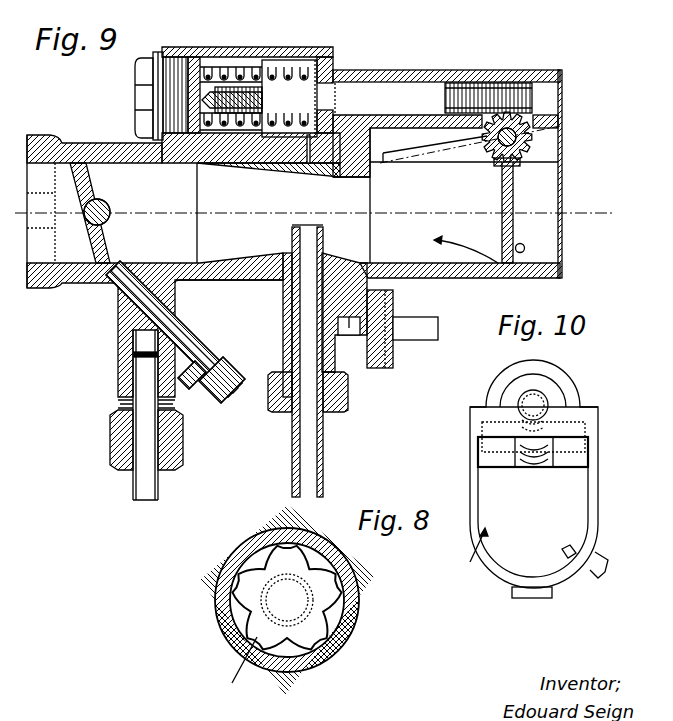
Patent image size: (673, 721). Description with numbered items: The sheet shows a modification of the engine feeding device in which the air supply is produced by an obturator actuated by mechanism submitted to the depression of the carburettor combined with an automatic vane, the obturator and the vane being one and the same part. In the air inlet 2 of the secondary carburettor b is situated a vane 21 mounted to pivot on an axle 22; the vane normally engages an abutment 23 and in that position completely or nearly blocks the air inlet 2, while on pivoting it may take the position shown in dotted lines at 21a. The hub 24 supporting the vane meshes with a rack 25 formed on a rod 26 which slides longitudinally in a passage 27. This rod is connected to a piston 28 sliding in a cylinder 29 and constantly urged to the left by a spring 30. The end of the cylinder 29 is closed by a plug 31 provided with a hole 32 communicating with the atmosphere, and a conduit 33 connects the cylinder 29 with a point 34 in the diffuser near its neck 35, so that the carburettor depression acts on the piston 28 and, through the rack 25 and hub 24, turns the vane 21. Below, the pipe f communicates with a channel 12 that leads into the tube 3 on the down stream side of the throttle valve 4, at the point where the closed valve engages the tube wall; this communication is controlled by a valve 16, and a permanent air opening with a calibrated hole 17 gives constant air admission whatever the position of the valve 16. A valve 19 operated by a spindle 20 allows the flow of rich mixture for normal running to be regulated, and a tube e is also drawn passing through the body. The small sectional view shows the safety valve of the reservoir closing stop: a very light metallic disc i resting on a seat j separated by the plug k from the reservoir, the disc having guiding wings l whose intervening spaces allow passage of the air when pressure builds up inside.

In FIG. 9, the air inlet 2 is at (545, 195).
In FIG. 9, the tube 3 is at (48, 213).
In FIG. 9, the throttle valve 4 is at (95, 163).
In FIG. 9, the channel 12 is at (115, 282).
In FIG. 9, the valve 16 is at (135, 340).
In FIG. 9, the calibrated hole 17 is at (224, 387).
In FIG. 9, the valve 19 is at (352, 335).
In FIG. 9, the spindle 20 is at (438, 325).
In FIG. 9, the vane 21 is at (514, 228).
In FIG. 10, the vane 21 is at (475, 555).
In FIG. 9, the vane position 21a is at (470, 159).
In FIG. 9, the axle 22 is at (520, 142).
In FIG. 10, the axle 22 is at (565, 452).
In FIG. 9, the abutment 23 is at (518, 262).
In FIG. 10, the abutment 23 is at (580, 553).
In FIG. 9, the hub 24 is at (520, 160).
In FIG. 10, the hub 24 is at (570, 463).
In FIG. 9, the rack 25 is at (508, 72).
In FIG. 10, the rack 25 is at (540, 402).
In FIG. 9, the rod 26 is at (380, 82).
In FIG. 9, the passage 27 is at (548, 97).
In FIG. 10, the passage 27 is at (545, 405).
In FIG. 9, the piston 28 is at (203, 57).
In FIG. 9, the cylinder 29 is at (292, 65).
In FIG. 9, the spring 30 is at (335, 47).
In FIG. 9, the plug 31 is at (170, 92).
In FIG. 9, the hole 32 is at (160, 50).
In FIG. 9, the conduit 33 is at (270, 178).
In FIG. 9, the point 34 is at (312, 178).
In FIG. 9, the neck 35 is at (335, 197).
In FIG. 9, the secondary carburettor b is at (262, 275).
In FIG. 9, the tube e is at (300, 243).
In FIG. 9, the pipe f is at (133, 360).
In FIG. 8, the valve i is at (260, 623).
In FIG. 8, the seat j is at (313, 607).
In FIG. 8, the plug k is at (352, 617).
In FIG. 8, the guiding wings l is at (243, 672).